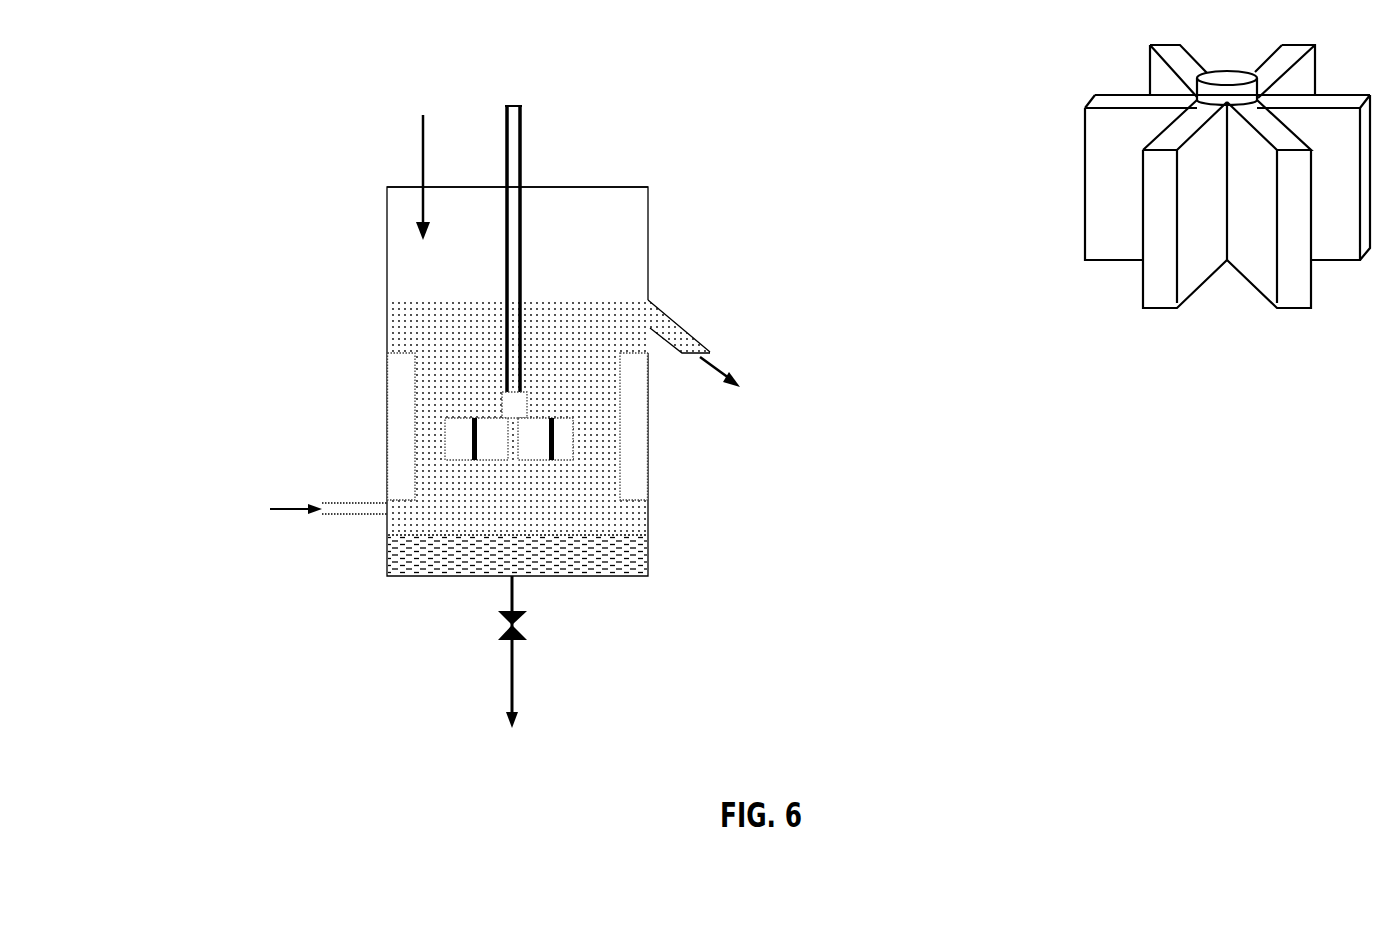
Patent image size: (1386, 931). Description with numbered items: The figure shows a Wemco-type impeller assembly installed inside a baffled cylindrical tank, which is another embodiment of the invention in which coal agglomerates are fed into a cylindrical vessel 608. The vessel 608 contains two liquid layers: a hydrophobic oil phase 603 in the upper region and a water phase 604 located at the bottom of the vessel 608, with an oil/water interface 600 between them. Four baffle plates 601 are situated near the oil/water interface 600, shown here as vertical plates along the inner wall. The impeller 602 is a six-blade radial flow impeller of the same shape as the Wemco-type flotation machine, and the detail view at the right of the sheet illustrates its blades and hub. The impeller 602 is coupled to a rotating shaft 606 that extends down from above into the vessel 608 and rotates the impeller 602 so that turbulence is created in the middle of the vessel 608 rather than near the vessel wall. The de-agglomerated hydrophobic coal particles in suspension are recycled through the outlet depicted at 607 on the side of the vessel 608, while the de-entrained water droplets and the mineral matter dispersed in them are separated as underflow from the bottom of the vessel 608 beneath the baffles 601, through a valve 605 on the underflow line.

The oil/water interface 600 is at (767, 409).
The baffle plates 601 is at (403, 380).
The impeller 602 is at (573, 440).
The hydrophobic oil phase 603 is at (420, 332).
The water phase 604 is at (430, 552).
The underflow valve 605 is at (503, 623).
The rotating shaft 606 is at (522, 238).
The outlet 607 is at (320, 514).
The cylindrical vessel 608 is at (380, 222).